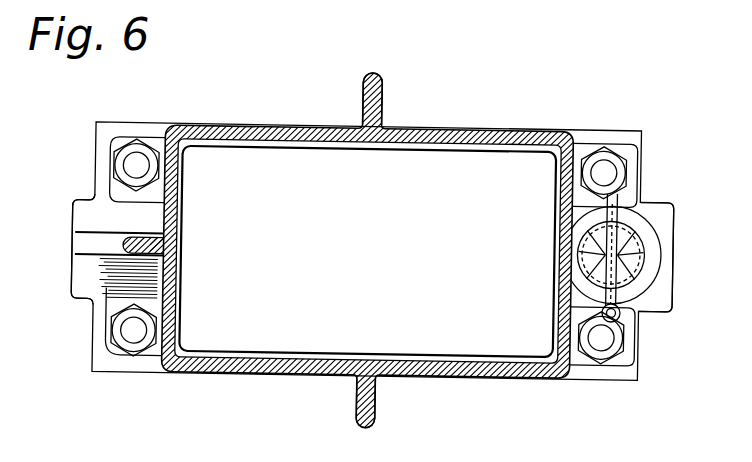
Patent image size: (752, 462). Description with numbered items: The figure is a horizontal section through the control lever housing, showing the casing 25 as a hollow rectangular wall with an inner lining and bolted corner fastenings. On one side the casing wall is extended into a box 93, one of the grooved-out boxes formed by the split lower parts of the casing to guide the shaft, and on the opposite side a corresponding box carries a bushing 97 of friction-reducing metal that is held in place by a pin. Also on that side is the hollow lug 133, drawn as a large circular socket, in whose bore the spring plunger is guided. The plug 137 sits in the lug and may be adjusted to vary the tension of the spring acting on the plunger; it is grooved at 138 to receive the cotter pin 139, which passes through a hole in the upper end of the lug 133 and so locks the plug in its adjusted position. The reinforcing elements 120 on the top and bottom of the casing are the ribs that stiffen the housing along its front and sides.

The casing 25 is at (416, 130).
The box 93 is at (77, 203).
The bushing 97 is at (661, 212).
The key rib 120 is at (373, 88).
The hollow lug 133 is at (646, 276).
The plug 137 is at (622, 214).
The groove 138 is at (634, 259).
The cotter pin 139 is at (621, 316).